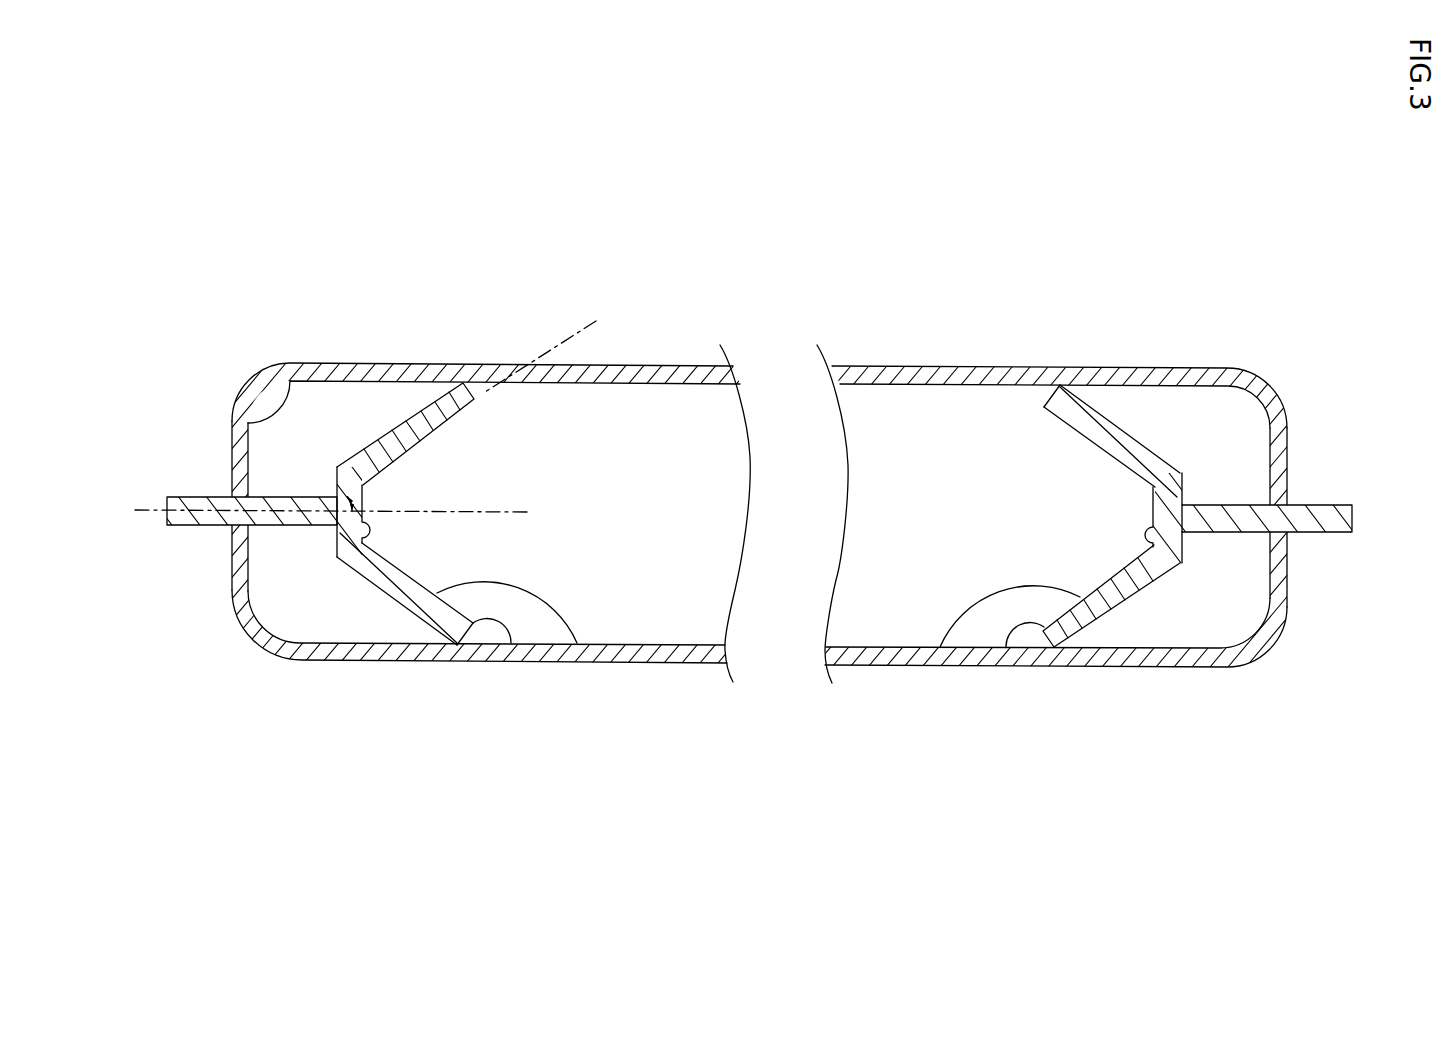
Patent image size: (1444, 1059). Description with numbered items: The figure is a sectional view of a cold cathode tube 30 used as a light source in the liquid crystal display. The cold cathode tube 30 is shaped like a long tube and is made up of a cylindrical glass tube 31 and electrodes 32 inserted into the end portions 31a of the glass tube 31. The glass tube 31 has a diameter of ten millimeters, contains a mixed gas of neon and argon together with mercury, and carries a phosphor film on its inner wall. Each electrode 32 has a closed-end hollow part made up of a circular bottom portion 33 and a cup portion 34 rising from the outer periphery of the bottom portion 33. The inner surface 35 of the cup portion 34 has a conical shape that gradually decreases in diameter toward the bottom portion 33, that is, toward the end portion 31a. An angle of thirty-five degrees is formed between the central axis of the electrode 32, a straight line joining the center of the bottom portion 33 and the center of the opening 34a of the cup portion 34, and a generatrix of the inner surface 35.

The cold cathode tube 30 is at (320, 352).
The glass tube 31 is at (670, 365).
The end portion 31a is at (230, 472).
The electrode 32 is at (370, 584).
The bottom portion 33 is at (337, 557).
The cup portion 34 is at (405, 603).
The opening 34a is at (508, 647).
The inner surface 35 is at (578, 645).